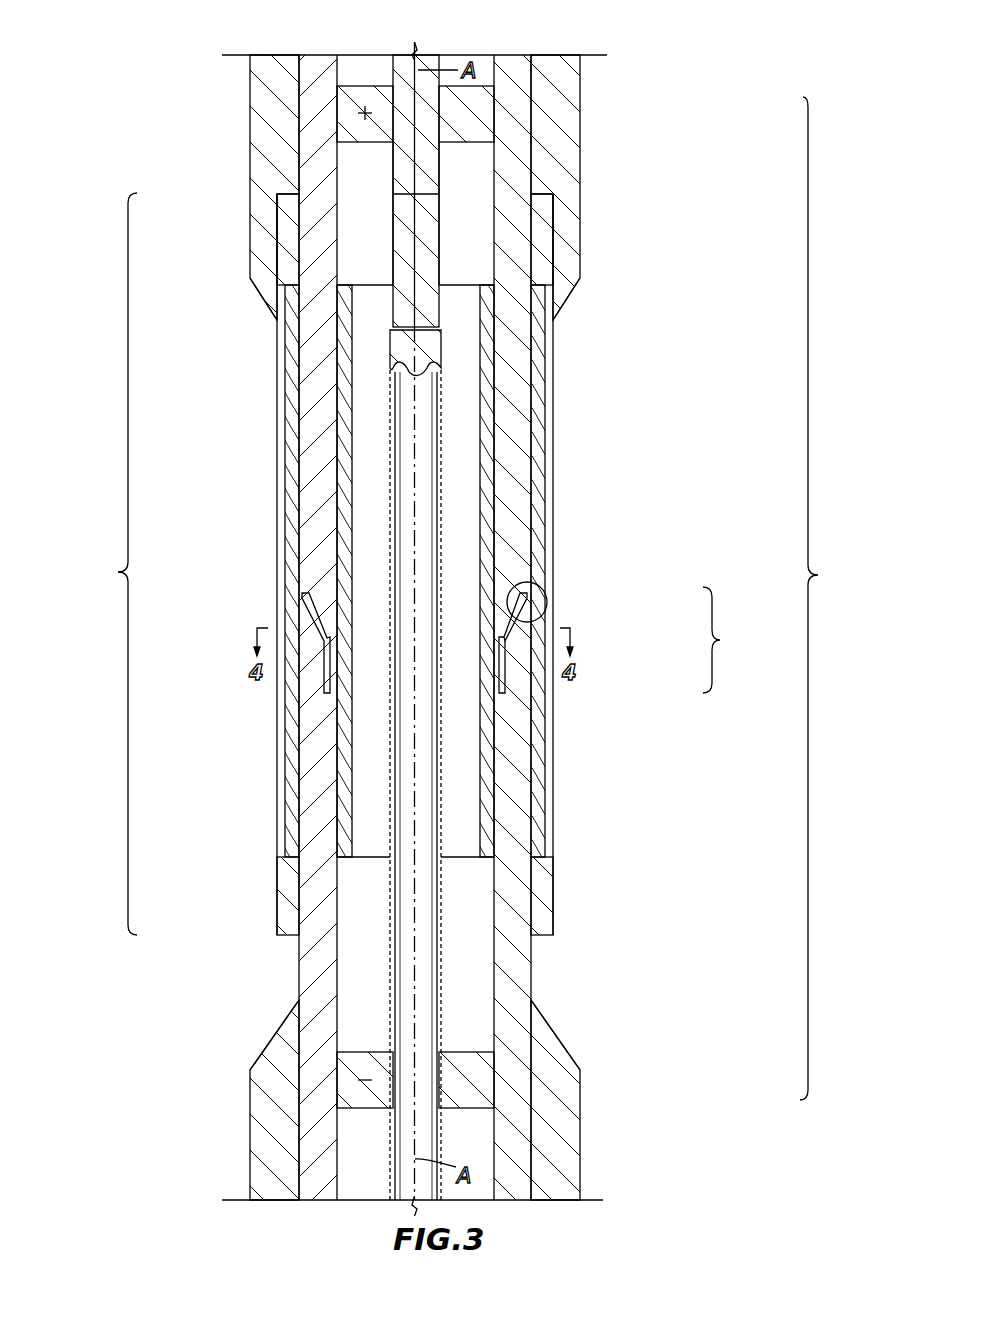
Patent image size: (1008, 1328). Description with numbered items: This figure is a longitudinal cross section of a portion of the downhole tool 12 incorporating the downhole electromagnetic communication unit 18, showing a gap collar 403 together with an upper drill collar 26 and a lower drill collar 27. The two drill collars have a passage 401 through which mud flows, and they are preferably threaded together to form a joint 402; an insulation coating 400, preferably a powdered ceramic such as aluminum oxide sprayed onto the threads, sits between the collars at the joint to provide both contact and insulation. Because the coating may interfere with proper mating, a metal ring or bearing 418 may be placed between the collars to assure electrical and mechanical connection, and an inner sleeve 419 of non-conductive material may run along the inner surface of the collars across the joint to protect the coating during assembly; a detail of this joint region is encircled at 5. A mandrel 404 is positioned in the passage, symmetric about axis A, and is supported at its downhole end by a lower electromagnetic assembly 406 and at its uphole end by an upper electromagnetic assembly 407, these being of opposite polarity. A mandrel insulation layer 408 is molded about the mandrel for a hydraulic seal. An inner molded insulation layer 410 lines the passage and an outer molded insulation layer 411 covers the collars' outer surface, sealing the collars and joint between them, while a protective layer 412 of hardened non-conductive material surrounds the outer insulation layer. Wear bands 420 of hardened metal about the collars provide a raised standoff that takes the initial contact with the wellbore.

The downhole tool 12 is at (826, 90).
The downhole electromagnetic communication unit 18 is at (820, 575).
The upper drill collar 26 is at (299, 128).
The lower drill collar 27 is at (300, 996).
The detail circle of FIG. 5 is at (548, 590).
The insulation coating 400 is at (316, 637).
The passage 401 is at (337, 194).
The joint 402 is at (720, 640).
The gap collar 403 is at (118, 572).
The mandrel 404 is at (440, 180).
The lower electromagnetic assembly 406 is at (482, 1082).
The upper electromagnetic assembly 407 is at (482, 118).
The mandrel insulation layer 408 is at (442, 378).
The inner molded insulation layer 410 is at (492, 487).
The outer molded insulation layer 411 is at (553, 543).
The protective layer 412 is at (555, 445).
The metal ring or bearing 418 is at (541, 603).
The inner sleeve 419 is at (501, 697).
The wear bands 420 is at (580, 262).